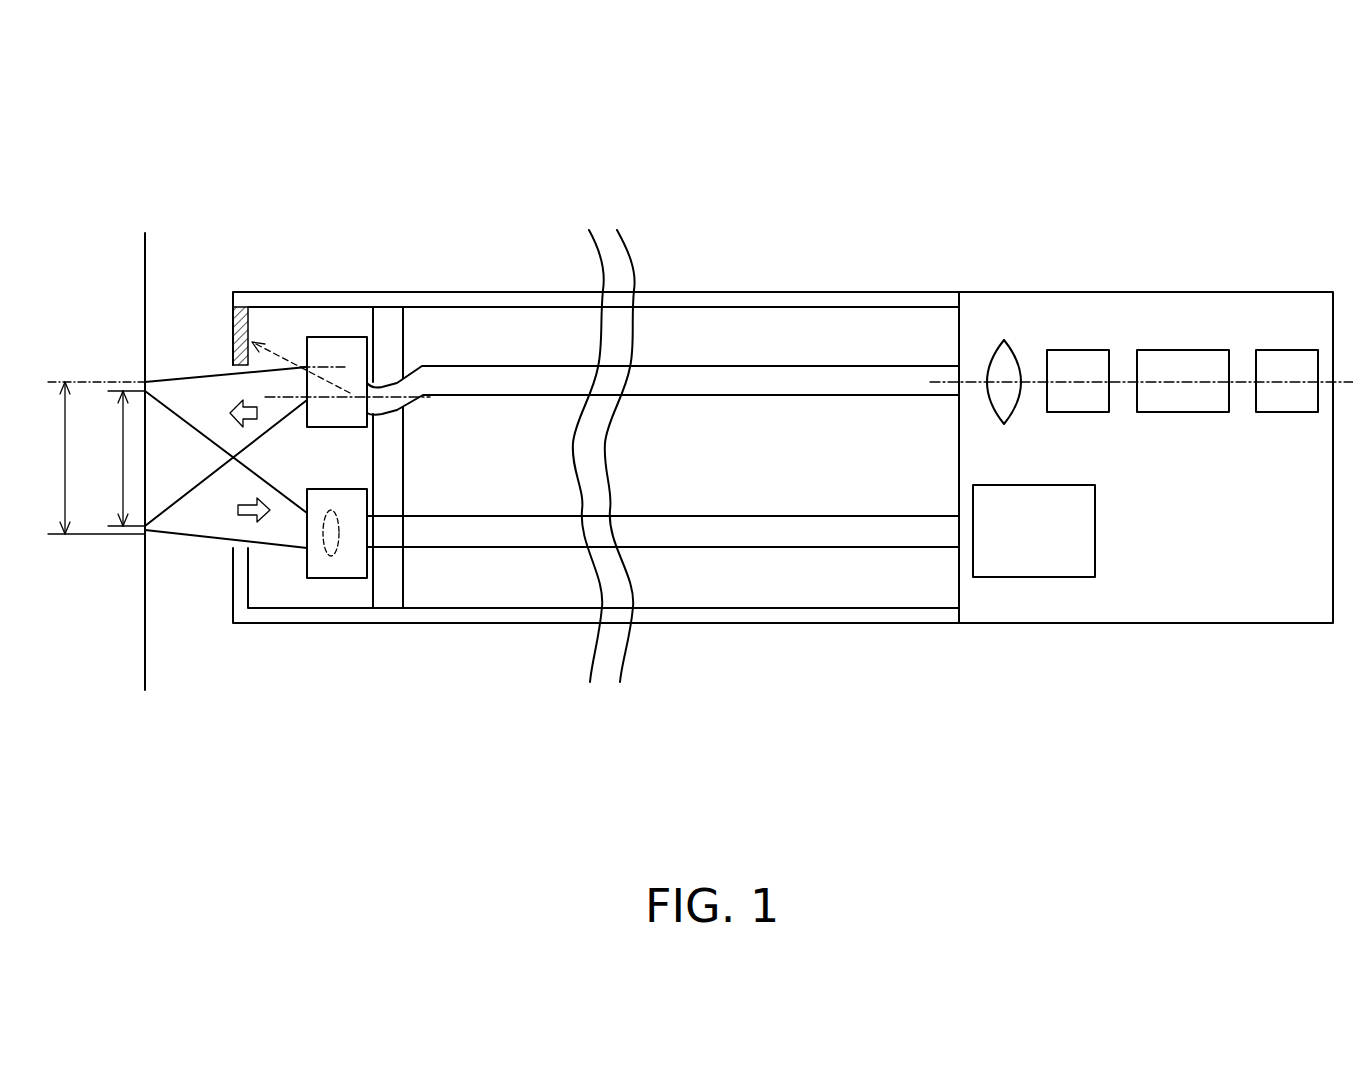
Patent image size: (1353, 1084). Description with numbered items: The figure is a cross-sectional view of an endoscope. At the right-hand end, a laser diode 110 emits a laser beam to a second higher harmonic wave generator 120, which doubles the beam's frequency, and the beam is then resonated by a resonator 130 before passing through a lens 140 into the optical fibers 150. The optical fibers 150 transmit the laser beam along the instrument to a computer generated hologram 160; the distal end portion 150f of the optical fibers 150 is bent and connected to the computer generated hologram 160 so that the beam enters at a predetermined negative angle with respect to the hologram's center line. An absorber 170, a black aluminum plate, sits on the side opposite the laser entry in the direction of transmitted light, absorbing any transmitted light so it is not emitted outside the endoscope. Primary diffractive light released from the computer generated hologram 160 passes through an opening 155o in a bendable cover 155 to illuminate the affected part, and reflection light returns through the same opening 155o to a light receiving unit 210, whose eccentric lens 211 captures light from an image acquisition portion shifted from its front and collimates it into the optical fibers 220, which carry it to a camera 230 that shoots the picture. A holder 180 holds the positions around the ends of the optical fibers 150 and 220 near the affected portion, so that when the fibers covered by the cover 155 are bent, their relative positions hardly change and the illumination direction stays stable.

The laser diode 110 is at (1290, 350).
The second higher harmonic wave generator 120 is at (1185, 350).
The resonator 130 is at (1078, 350).
The lens 140 is at (1004, 340).
The optical fibers 150 is at (870, 366).
The distal end portion of the optical fibers 150f is at (399, 365).
The cover 155 is at (705, 291).
The opening 155o is at (228, 548).
The computer generated hologram 160 is at (358, 337).
The absorber 170 is at (248, 323).
The holder 180 is at (403, 337).
The light receiving unit 210 is at (350, 578).
The eccentric lens 211 is at (333, 578).
The optical fibers 220 is at (873, 548).
The camera 230 is at (1007, 577).